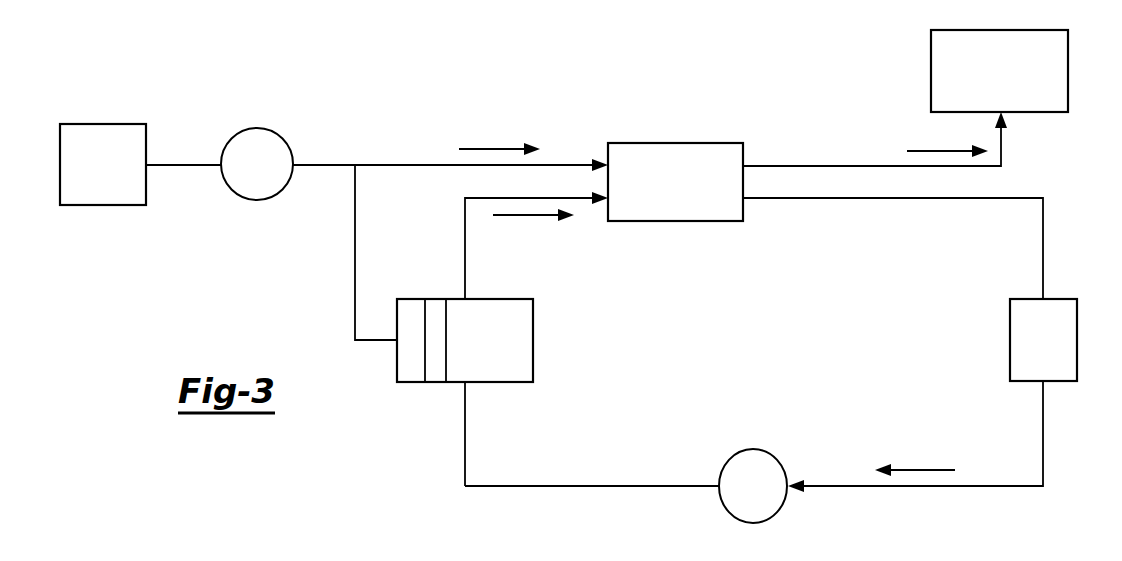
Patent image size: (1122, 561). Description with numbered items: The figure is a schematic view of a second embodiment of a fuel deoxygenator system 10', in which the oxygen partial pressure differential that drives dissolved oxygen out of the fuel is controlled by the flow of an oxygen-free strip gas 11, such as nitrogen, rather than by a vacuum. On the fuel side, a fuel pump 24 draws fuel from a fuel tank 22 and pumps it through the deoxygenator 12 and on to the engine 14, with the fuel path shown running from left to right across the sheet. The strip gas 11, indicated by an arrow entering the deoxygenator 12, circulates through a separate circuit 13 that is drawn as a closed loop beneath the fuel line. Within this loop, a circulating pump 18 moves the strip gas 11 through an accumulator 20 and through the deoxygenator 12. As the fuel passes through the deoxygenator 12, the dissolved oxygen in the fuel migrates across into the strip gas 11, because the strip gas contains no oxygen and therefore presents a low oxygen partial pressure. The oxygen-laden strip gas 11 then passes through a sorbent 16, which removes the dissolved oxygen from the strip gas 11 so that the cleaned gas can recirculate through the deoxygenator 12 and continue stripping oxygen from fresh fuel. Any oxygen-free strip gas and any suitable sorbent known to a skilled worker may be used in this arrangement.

The fuel deoxygenator system 10' is at (784, 99).
The strip gas 11 is at (540, 215).
The deoxygenator 12 is at (673, 143).
The separate circuit 13 is at (465, 428).
The engine 14 is at (1068, 70).
The sorbent 16 is at (1056, 354).
The circulating pump 18 is at (775, 440).
The accumulator 20 is at (480, 352).
The fuel tank 22 is at (103, 124).
The fuel pump 24 is at (257, 200).